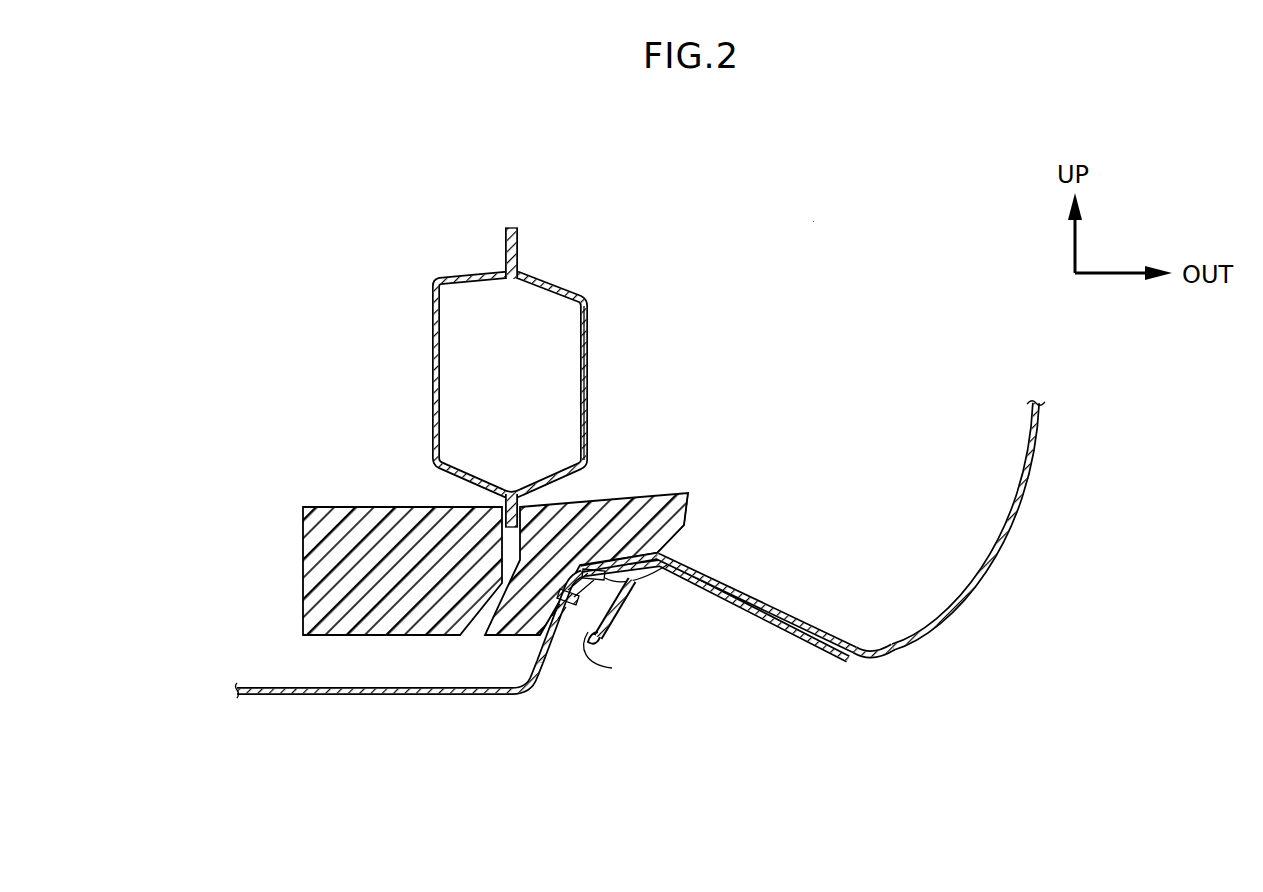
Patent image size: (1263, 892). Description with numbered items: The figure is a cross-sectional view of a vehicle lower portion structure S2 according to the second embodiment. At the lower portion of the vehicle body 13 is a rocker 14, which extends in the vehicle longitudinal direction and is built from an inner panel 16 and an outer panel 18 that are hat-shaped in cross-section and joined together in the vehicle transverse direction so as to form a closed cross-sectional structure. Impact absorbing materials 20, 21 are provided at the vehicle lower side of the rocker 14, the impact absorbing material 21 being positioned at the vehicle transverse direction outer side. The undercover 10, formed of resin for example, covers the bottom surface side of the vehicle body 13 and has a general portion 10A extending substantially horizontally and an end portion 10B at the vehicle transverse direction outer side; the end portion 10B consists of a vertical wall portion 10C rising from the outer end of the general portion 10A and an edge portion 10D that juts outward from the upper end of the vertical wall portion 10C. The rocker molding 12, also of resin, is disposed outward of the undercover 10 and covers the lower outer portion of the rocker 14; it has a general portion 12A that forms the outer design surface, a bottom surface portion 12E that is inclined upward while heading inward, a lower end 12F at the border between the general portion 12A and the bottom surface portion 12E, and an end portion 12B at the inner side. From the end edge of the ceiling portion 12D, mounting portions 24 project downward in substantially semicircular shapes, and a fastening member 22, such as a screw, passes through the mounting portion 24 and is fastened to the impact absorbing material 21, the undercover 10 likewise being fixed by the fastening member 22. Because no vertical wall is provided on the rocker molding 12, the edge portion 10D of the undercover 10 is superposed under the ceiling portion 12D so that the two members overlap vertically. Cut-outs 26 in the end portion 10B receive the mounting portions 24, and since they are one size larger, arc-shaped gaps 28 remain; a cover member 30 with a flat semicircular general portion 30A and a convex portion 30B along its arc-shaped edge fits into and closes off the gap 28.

The undercover 10 is at (558, 695).
The general portion 10A is at (477, 696).
The end portion 10B is at (621, 620).
The vertical wall portion 10C is at (540, 652).
The edge portion 10D is at (710, 590).
The rocker molding 12 is at (871, 570).
The general portion 12A is at (1040, 436).
The end portion 12B is at (727, 518).
The ceiling portion 12D is at (667, 547).
The bottom surface portion 12E is at (795, 633).
The lower end 12F is at (868, 655).
The vehicle body 13 is at (498, 386).
The rocker 14 is at (525, 351).
The inner panel 16 is at (432, 367).
The outer panel 18 is at (590, 350).
The impact absorbing material 20 is at (390, 506).
The impact absorbing material 21 is at (615, 495).
The fastening member 22 is at (556, 681).
The mounting portion 24 is at (670, 513).
The cut-out 26 is at (570, 603).
The gap 28 is at (538, 673).
The cover member 30 is at (657, 648).
The general portion 30A is at (636, 610).
The convex portion 30B is at (605, 650).
The vehicle lower portion structure S2 is at (813, 222).